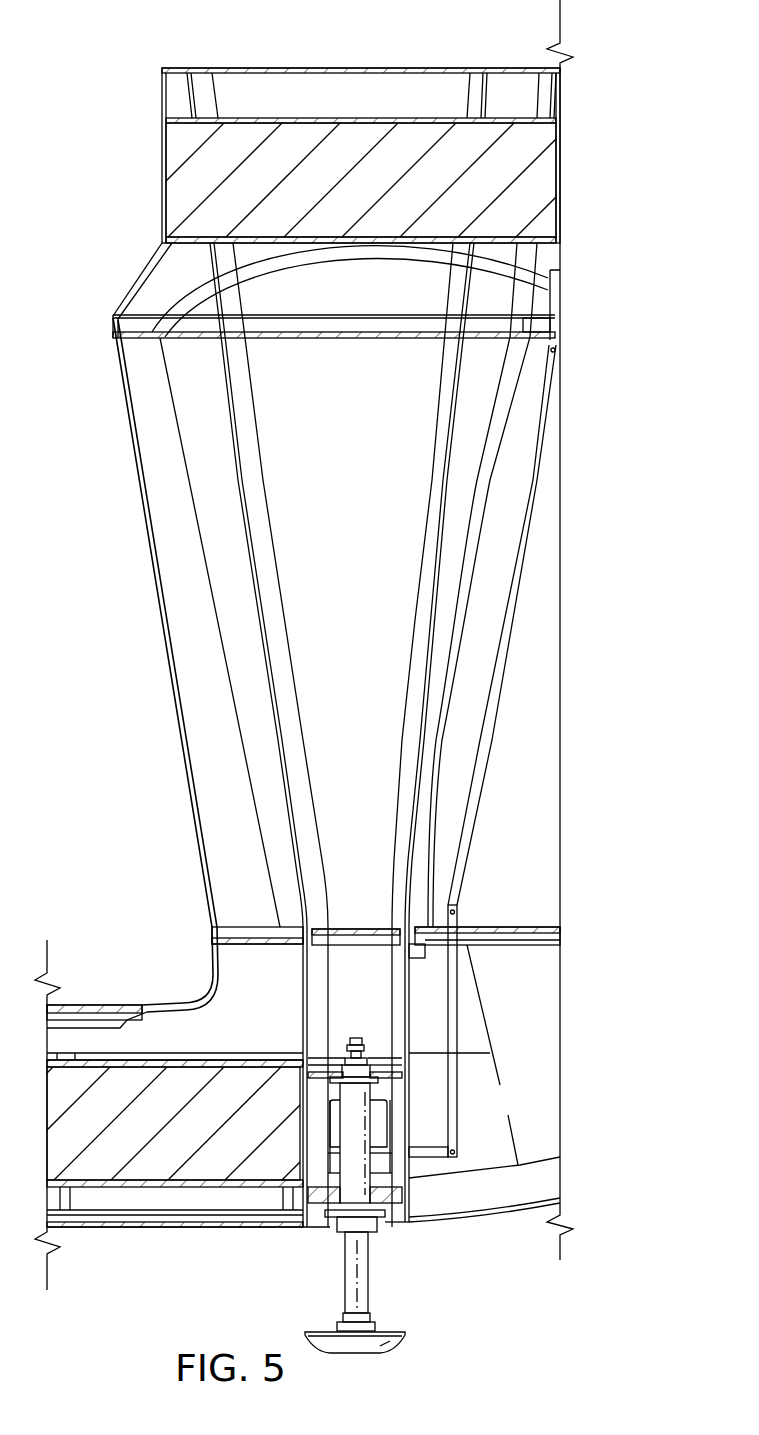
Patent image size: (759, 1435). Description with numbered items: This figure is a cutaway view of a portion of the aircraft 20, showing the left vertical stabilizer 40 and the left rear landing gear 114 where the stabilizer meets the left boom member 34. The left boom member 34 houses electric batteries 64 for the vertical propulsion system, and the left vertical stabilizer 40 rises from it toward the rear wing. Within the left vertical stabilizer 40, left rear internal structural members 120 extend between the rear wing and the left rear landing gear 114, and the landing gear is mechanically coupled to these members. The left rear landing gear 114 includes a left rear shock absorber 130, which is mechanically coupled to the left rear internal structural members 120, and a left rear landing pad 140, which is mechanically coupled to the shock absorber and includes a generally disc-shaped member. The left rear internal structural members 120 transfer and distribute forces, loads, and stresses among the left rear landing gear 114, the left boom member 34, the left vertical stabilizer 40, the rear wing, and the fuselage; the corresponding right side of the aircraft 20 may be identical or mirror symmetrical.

The aircraft 20 is at (89, 70).
The left boom member 34 is at (117, 987).
The left vertical stabilizer 40 is at (156, 603).
The electric batteries 64 is at (148, 1138).
The left rear landing gear 114 is at (388, 1261).
The left rear internal structural members 120 is at (536, 90).
The left rear shock absorber 130 is at (372, 1127).
The left rear landing pad 140 is at (398, 1340).